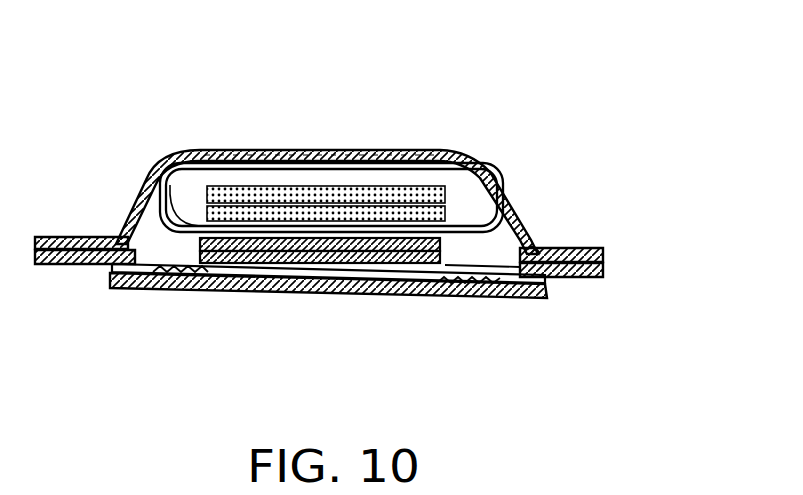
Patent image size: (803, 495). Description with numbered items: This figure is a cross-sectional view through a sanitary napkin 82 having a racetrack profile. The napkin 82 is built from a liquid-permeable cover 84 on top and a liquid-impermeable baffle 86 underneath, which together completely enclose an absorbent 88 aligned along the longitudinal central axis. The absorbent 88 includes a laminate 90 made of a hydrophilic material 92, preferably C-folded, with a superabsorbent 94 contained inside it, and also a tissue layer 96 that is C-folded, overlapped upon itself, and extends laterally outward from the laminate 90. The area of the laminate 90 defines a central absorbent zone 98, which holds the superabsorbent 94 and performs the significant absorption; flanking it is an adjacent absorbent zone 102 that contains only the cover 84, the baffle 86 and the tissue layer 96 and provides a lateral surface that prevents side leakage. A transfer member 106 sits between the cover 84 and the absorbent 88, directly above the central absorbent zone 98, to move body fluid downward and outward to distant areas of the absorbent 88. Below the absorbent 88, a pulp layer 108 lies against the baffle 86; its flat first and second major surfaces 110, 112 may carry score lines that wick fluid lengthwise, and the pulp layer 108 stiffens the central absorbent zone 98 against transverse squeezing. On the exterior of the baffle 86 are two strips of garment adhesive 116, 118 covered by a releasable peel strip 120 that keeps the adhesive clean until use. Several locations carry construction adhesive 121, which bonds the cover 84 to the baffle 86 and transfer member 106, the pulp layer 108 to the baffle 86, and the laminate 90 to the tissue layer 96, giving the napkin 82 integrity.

The sanitary napkin 82 is at (618, 92).
The liquid-permeable cover 84 is at (470, 153).
The liquid-impermeable baffle 86 is at (571, 277).
The absorbent 88 is at (190, 156).
The laminate 90 is at (462, 286).
The hydrophilic material 92 is at (397, 150).
The superabsorbent 94 is at (205, 210).
The tissue layer 96 is at (173, 156).
The central absorbent zone 98 is at (458, 199).
The adjacent absorbent zone 102 is at (532, 248).
The transfer member 106 is at (257, 148).
The pulp layer 108 is at (228, 272).
The first major surface 110 is at (255, 264).
The second major surface 112 is at (295, 275).
The garment adhesive strip 116 is at (158, 288).
The garment adhesive strip 118 is at (525, 298).
The releasable peel strip 120 is at (380, 297).
The construction adhesive 121 is at (353, 153).